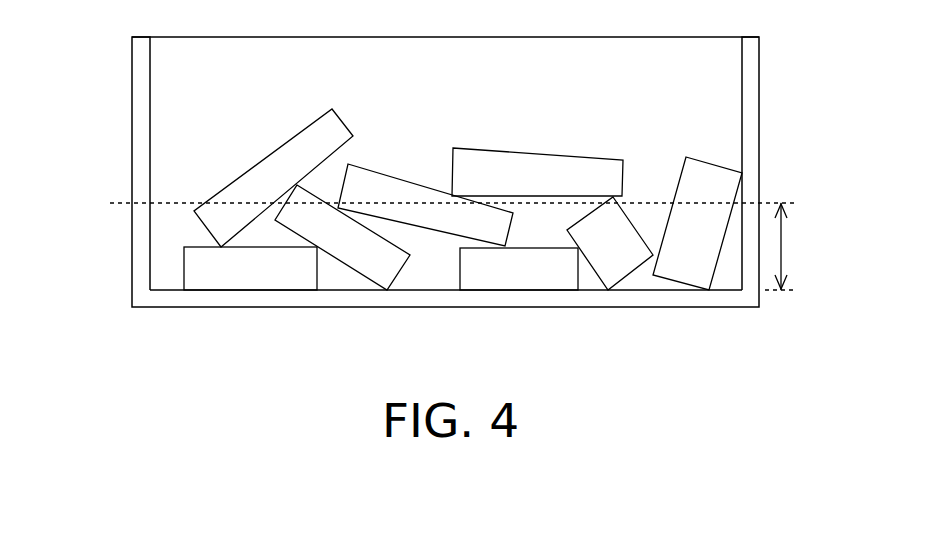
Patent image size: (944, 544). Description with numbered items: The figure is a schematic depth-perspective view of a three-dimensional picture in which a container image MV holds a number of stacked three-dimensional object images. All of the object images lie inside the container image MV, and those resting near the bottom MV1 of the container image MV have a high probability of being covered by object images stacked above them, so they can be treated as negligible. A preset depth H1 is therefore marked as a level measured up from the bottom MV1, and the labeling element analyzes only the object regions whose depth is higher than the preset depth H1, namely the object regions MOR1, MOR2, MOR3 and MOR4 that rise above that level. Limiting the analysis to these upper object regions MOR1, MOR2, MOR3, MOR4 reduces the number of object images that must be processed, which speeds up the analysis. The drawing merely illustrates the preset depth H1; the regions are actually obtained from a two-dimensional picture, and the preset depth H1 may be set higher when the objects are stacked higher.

The container image MV is at (131, 80).
The bottom of the container image MV1 is at (326, 296).
The object region MOR1 is at (237, 175).
The object region MOR2 is at (405, 178).
The object region MOR3 is at (540, 153).
The object region MOR4 is at (717, 163).
The preset depth H1 is at (800, 246).